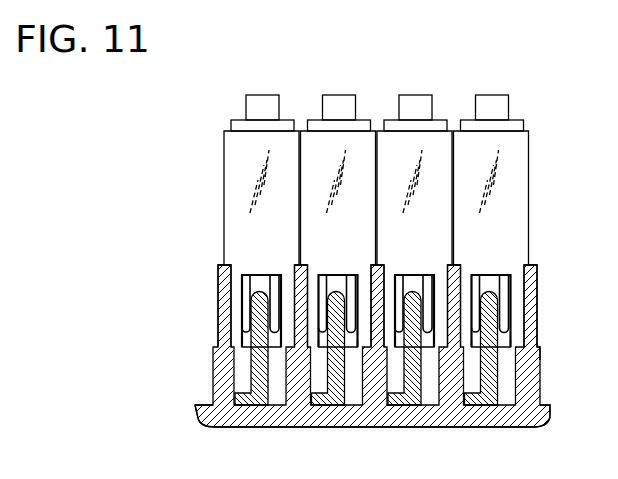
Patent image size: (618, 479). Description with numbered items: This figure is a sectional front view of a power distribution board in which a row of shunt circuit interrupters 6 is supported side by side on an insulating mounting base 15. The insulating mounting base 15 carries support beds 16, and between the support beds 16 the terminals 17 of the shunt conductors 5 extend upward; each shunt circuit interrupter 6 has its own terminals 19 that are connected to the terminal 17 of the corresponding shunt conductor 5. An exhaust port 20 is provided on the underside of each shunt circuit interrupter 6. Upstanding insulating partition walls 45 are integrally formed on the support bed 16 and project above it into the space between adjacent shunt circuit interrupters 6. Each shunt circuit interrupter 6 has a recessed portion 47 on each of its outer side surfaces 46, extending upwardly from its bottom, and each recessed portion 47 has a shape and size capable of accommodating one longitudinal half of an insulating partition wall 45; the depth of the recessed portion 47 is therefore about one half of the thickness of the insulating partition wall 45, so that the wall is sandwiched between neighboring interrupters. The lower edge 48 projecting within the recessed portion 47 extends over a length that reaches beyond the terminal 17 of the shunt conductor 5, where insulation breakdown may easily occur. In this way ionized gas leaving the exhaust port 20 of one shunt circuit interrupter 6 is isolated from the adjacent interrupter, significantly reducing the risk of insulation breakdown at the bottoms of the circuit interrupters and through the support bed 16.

The shunt conductor 5 is at (342, 373).
The shunt circuit interrupter 6 is at (237, 177).
The insulating mounting base 15 is at (550, 405).
The support bed 16 is at (219, 378).
The terminal of the shunt conductor 17 is at (488, 288).
The terminal of the shunt circuit interrupter 19 is at (245, 275).
The exhaust port 20 is at (274, 278).
The insulating partition wall 45 is at (219, 292).
The outer side surface 46 is at (222, 147).
The recessed portion 47 is at (220, 267).
The lower edge 48 is at (540, 346).